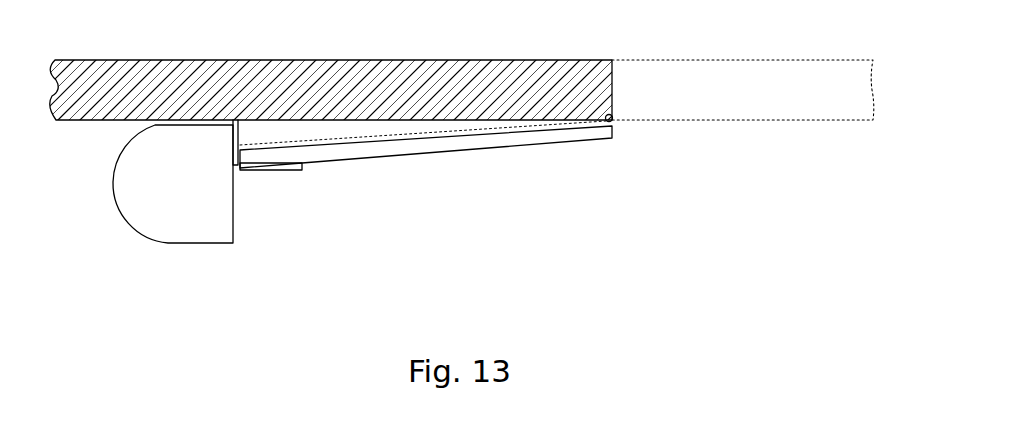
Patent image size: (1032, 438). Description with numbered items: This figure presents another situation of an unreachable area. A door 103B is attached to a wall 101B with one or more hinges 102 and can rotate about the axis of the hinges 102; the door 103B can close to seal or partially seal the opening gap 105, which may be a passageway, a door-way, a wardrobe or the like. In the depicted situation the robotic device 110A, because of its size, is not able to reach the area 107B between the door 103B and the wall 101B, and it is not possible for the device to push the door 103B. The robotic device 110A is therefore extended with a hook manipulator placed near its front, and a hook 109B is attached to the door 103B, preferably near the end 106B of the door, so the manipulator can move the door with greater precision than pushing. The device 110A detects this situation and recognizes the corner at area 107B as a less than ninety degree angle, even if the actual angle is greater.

The wall 101B is at (337, 90).
The hinge 102 is at (613, 117).
The door 103B is at (420, 145).
The opening gap 105 is at (772, 89).
The end of the door 106B is at (237, 163).
The unreachable area 107B is at (354, 129).
The hook 109B is at (297, 165).
The robotic device 110A is at (178, 201).